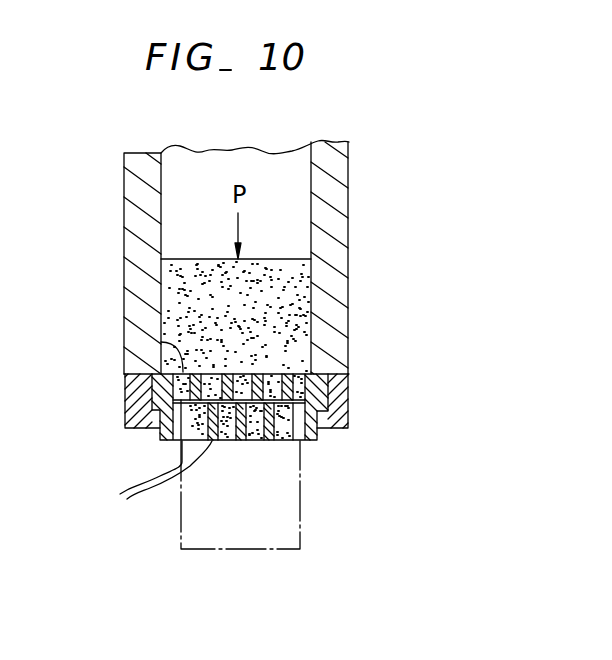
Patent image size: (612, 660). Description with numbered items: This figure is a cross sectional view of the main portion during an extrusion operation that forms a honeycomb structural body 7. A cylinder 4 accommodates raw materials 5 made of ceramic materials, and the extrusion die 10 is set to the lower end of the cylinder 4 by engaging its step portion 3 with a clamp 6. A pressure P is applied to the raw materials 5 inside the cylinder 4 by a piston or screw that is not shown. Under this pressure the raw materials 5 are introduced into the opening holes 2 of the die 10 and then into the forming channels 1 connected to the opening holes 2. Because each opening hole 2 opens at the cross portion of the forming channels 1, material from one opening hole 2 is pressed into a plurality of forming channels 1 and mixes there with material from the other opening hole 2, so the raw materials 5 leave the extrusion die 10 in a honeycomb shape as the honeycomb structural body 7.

The forming channels 1 is at (162, 487).
The opening holes 2 is at (161, 342).
The step portion 3 is at (331, 426).
The cylinder 4 is at (348, 203).
The raw materials 5 is at (300, 304).
The clamp 6 is at (343, 405).
The honeycomb structural body 7 is at (295, 514).
The extrusion die 10 is at (340, 377).